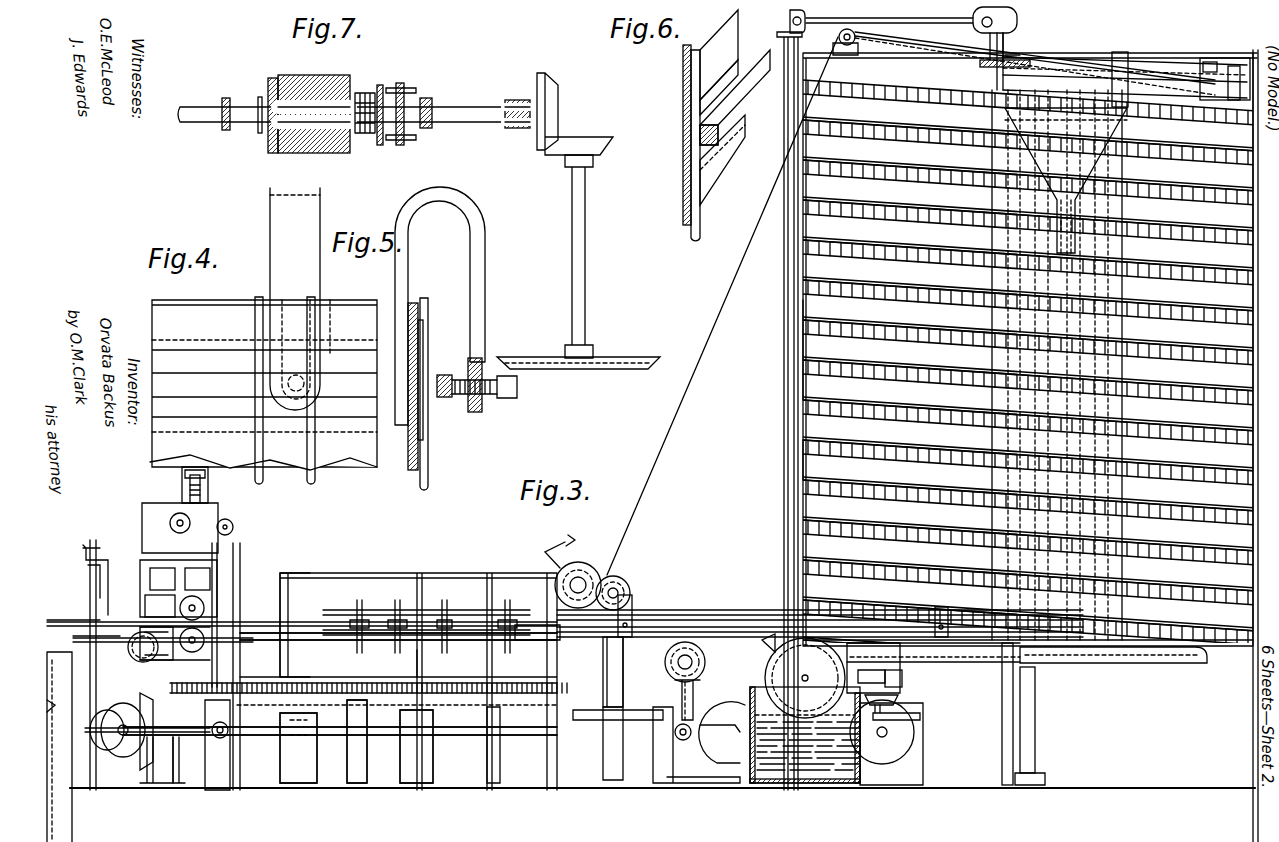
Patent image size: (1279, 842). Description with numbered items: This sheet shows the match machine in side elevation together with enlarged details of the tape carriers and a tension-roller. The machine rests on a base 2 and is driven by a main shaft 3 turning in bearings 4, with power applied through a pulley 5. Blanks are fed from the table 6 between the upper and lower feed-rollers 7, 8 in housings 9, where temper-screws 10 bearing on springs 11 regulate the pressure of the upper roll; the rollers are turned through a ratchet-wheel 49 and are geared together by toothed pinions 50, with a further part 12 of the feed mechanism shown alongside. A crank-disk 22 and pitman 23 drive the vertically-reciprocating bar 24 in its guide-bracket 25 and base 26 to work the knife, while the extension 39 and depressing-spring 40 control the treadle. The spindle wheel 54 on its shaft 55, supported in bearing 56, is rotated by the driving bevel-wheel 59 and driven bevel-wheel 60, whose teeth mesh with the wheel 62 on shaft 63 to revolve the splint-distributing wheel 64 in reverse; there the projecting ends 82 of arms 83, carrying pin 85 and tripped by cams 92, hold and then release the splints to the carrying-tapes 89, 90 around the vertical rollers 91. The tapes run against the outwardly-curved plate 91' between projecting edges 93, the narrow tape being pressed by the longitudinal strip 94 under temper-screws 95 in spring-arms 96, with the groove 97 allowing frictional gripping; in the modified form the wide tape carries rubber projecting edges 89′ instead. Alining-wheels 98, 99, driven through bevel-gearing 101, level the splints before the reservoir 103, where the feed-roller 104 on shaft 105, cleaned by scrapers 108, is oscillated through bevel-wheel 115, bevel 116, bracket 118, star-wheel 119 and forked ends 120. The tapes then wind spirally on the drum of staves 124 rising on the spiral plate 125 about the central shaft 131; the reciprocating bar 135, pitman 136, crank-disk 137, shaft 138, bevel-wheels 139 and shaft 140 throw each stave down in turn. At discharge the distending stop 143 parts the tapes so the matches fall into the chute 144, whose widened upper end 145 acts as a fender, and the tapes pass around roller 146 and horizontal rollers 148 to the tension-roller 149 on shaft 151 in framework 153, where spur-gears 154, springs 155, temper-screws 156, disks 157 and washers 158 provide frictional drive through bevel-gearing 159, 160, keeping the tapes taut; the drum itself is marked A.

In FIG. 3, the base 2 is at (662, 801).
In FIG. 3, the main shaft 3 is at (525, 735).
In FIG. 3, the bearings 4 is at (180, 760).
In FIG. 3, the pulley 5 is at (59, 747).
In FIG. 3, the table 6 is at (70, 620).
In FIG. 3, the upper feed-roller 7 is at (160, 606).
In FIG. 3, the lower feed-roller 8 is at (156, 643).
In FIG. 3, the housings 9 is at (220, 585).
In FIG. 3, the temper-screws 10 is at (230, 555).
In FIG. 3, the springs 11 is at (212, 598).
In FIG. 3, the gear 12 is at (150, 610).
In FIG. 3, the crank-disk 22 is at (105, 752).
In FIG. 3, the pitman 23 is at (125, 690).
In FIG. 3, the vertically-reciprocating bar 24 is at (88, 578).
In FIG. 3, the guide-bracket 25 is at (83, 555).
In FIG. 3, the base 26 is at (73, 640).
In FIG. 3, the extension 39 is at (185, 500).
In FIG. 3, the depressing-spring 40 is at (208, 488).
In FIG. 3, the ratchet-wheel 49 is at (150, 662).
In FIG. 3, the toothed pinions 50 is at (205, 660).
In FIG. 3, the blank-carrying or spindle wheel 54 is at (315, 640).
In FIG. 3, the shaft 55 is at (308, 592).
In FIG. 3, the bearing 56 is at (298, 748).
In FIG. 3, the driving bevel-wheel 59 is at (222, 762).
In FIG. 3, the driven bevel-wheel 60 is at (375, 735).
In FIG. 3, the wheel 62 is at (545, 688).
In FIG. 3, the shaft 63 is at (425, 665).
In FIG. 3, the splint-distributing wheel 64 is at (446, 605).
In FIG. 3, the projecting ends 82 is at (512, 605).
In FIG. 3, the arms 83 is at (397, 600).
In FIG. 3, the pin 85 is at (357, 600).
In FIG. 6, the carrying-tape 89 is at (680, 140).
In FIG. 3, the carrying-tape 89 is at (670, 610).
In FIG. 6, the projecting edges 89′ is at (725, 215).
In FIG. 6, the carrying-tape 90 is at (719, 87).
In FIG. 3, the carrying-tape 90 is at (540, 650).
In FIG. 3, the vertical rollers 91 is at (529, 642).
In FIG. 5, the outwardly-curved plate 91' is at (399, 408).
In FIG. 3, the cams 92 is at (624, 668).
In FIG. 4, the projecting edges 93 is at (340, 480).
In FIG. 5, the projecting edges 93 is at (448, 473).
In FIG. 3, the projecting edges 93 is at (762, 632).
In FIG. 4, the longitudinal strip 94 is at (263, 385).
In FIG. 5, the longitudinal strip 94 is at (445, 397).
In FIG. 6, the longitudinal strip 94 is at (760, 100).
In FIG. 3, the longitudinal strip 94 is at (733, 627).
In FIG. 4, the temper-screws 95 is at (296, 391).
In FIG. 5, the temper-screws 95 is at (517, 392).
In FIG. 3, the temper-screws 95 is at (952, 640).
In FIG. 4, the spring-arms 96 is at (295, 299).
In FIG. 5, the spring-arms 96 is at (485, 310).
In FIG. 3, the spring-arms 96 is at (622, 580).
In FIG. 4, the groove 97 is at (338, 335).
In FIG. 5, the groove 97 is at (408, 440).
In FIG. 3, the upper alining-wheel 98 is at (585, 562).
In FIG. 3, the lower alining-wheel 99 is at (705, 660).
In FIG. 3, the bevel-gearing 101 is at (695, 685).
In FIG. 3, the reservoir 103 is at (805, 760).
In FIG. 3, the feed-roller 104 is at (805, 678).
In FIG. 3, the shaft 105 is at (803, 683).
In FIG. 3, the scrapers 108 is at (762, 650).
In FIG. 3, the bevel-wheel 115 is at (912, 743).
In FIG. 3, the bevel 116 is at (898, 699).
In FIG. 3, the bracket 118 is at (920, 716).
In FIG. 3, the star-wheel 119 is at (902, 678).
In FIG. 3, the forked ends 120 is at (870, 665).
In FIG. 3, the staves 124 is at (800, 458).
In FIG. 3, the spirally-disposed circular plate 125 is at (1068, 678).
In FIG. 3, the vertical central shaft 131 is at (1035, 718).
In FIG. 3, the reciprocating bar 135 is at (990, 64).
In FIG. 3, the pitman 136 is at (985, 50).
In FIG. 3, the crank-disk 137 is at (1017, 15).
In FIG. 3, the shaft 138 is at (888, 26).
In FIG. 3, the bevel-wheels 139 is at (790, 20).
In FIG. 3, the shaft 140 is at (800, 358).
In FIG. 3, the distending stop 143 is at (1125, 60).
In FIG. 3, the chute 144 is at (1066, 180).
In FIG. 3, the upper end of the chute 145 is at (1065, 75).
In FIG. 3, the vertically-mounted roller 146 is at (1240, 68).
In FIG. 3, the horizontal rollers 148 is at (858, 46).
In FIG. 7, the tension-roller 149 is at (312, 75).
In FIG. 7, the shaft 151 is at (465, 110).
In FIG. 7, the framework 153 is at (226, 98).
In FIG. 7, the spur-gears 154 is at (272, 153).
In FIG. 7, the springs 155 is at (365, 93).
In FIG. 7, the temper-screws 156 is at (416, 90).
In FIG. 7, the disks 157 is at (400, 83).
In FIG. 7, the washers 158 is at (380, 145).
In FIG. 7, the bevel-gearing 159 is at (558, 105).
In FIG. 7, the bevel-gearing 160 is at (625, 368).
In FIG. 3, the lever A is at (1025, 36).